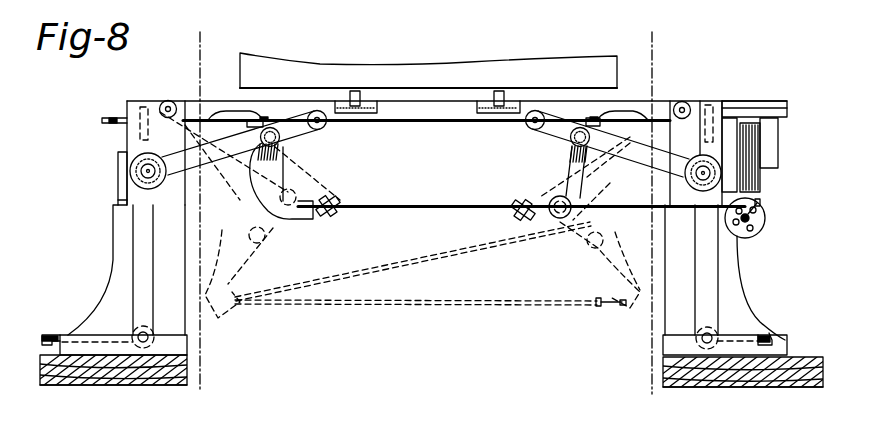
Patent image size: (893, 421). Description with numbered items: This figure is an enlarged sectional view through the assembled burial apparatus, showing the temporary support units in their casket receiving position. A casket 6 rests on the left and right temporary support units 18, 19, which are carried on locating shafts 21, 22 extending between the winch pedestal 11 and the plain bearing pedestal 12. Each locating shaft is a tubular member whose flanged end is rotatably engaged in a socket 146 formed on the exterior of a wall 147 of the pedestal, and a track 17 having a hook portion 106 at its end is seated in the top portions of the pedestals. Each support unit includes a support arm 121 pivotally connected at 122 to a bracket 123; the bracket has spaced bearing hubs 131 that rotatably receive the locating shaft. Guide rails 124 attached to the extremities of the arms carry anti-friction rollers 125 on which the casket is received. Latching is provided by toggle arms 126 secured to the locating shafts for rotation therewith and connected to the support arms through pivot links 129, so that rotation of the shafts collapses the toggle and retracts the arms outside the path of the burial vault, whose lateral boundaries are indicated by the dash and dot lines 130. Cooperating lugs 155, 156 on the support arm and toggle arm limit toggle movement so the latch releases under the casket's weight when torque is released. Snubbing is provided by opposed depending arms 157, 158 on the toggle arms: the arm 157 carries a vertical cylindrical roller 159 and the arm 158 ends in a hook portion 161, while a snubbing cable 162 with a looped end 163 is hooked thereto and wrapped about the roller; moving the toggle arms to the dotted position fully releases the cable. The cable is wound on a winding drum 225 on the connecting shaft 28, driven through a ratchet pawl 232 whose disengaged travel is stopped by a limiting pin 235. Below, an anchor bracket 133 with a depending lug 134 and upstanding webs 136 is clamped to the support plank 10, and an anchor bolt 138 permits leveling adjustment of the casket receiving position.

The casket 6 is at (418, 64).
The support plank 10 is at (96, 386).
The winch pedestal 11 is at (740, 284).
The plain bearing pedestal 12 is at (125, 270).
The track 17 is at (758, 106).
The left temporary support unit 18 is at (328, 135).
The right temporary support unit 19 is at (522, 134).
The locating shaft 21 is at (141, 171).
The locating shaft 22 is at (688, 168).
The connecting shaft 28 is at (752, 236).
The hook portion 106 is at (102, 120).
The support arm 121 is at (229, 101).
The pivot connection 122 is at (178, 86).
The bracket 123 is at (140, 140).
The guide rail 124 is at (344, 101).
The anti-friction roller 125 is at (356, 91).
The toggle arm 126 is at (236, 146).
The pivot link 129 is at (288, 130).
The dash and dot line 130 is at (200, 36).
The bearing hub 131 is at (137, 204).
The anchor bracket 133 is at (178, 350).
The depending lug 134 is at (187, 374).
The web 136 is at (88, 335).
The anchor bolt 138 is at (44, 335).
The socket 146 is at (120, 182).
The wall 147 is at (118, 200).
The lug 155 is at (309, 113).
The lug 156 is at (560, 251).
The depending arm 157 is at (279, 176).
The depending arm 158 is at (570, 156).
The cylindrical roller 159 is at (316, 194).
The hook portion 161 is at (558, 218).
The snubbing cable 162 is at (423, 206).
The looped end 163 is at (598, 306).
The winding drum 225 is at (760, 224).
The ratchet pawl 232 is at (757, 214).
The limiting pin 235 is at (761, 202).